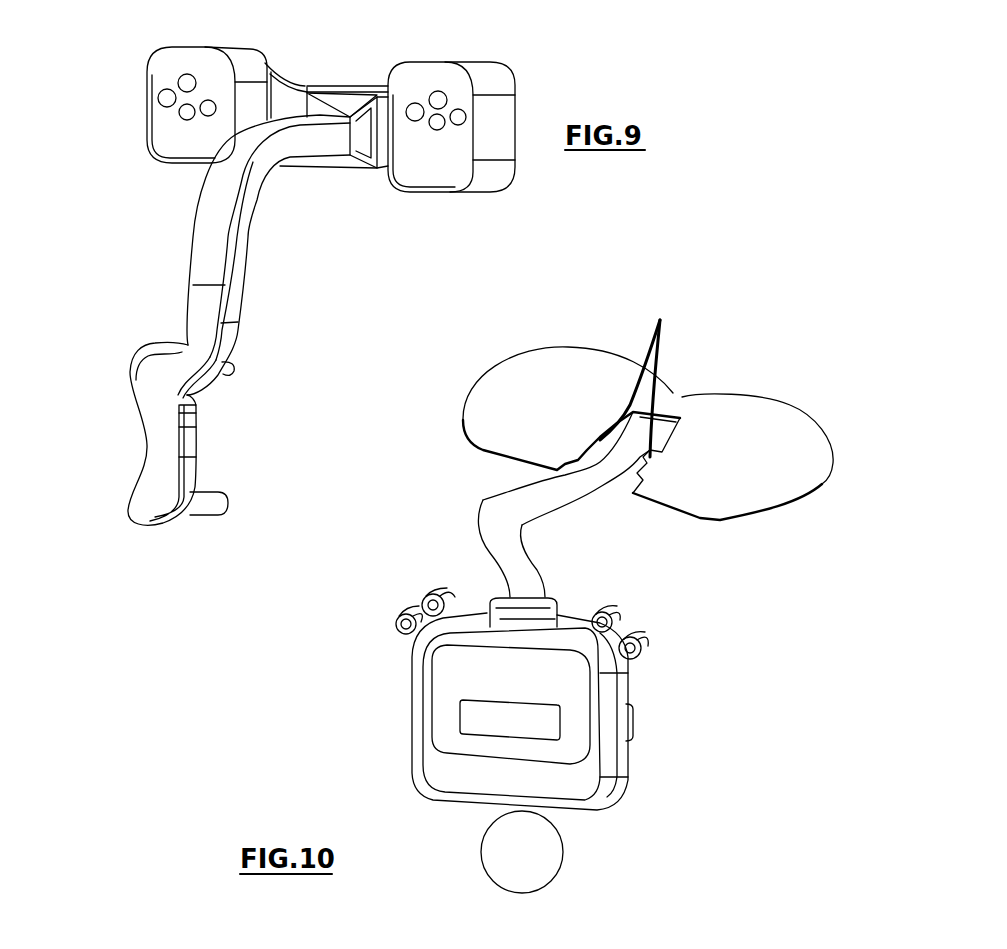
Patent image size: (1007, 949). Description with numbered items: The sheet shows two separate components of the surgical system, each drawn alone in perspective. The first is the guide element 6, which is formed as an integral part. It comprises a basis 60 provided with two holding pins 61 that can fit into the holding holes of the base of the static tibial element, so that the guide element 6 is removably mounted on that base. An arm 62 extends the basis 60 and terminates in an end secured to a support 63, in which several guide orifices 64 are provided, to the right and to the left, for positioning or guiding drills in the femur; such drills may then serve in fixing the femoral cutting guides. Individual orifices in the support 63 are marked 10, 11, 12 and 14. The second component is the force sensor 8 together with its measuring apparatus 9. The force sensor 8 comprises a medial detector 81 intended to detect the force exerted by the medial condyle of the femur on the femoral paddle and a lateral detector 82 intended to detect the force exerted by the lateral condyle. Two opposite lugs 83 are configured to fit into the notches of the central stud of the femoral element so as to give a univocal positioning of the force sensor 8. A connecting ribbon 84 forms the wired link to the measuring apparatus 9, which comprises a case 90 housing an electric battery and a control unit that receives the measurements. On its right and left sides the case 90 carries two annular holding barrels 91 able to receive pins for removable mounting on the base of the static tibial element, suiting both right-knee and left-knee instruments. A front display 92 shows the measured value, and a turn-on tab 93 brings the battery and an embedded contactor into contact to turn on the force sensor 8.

In FIG. 9, the guide element 6 is at (93, 115).
In FIG. 9, the contact 10 is at (186, 125).
In FIG. 9, the contact 11 is at (210, 120).
In FIG. 9, the contact 12 is at (163, 110).
In FIG. 9, the contact 14 is at (188, 76).
In FIG. 9, the basis 60 is at (158, 432).
In FIG. 9, the holding pins 61 is at (230, 370).
In FIG. 9, the arm 62 is at (205, 247).
In FIG. 9, the support 63 is at (291, 97).
In FIG. 9, the guide orifices 64 is at (182, 83).
In FIG. 10, the force sensor 8 is at (593, 342).
In FIG. 10, the medial detector 81 is at (518, 380).
In FIG. 10, the lateral detector 82 is at (777, 425).
In FIG. 10, the lugs 83 is at (649, 367).
In FIG. 10, the connecting ribbon 84 is at (498, 505).
In FIG. 10, the measuring apparatus 9 is at (392, 699).
In FIG. 10, the case 90 is at (606, 792).
In FIG. 10, the annular holding barrels 91 is at (432, 596).
In FIG. 10, the front display 92 is at (468, 716).
In FIG. 10, the turn-on tab 93 is at (550, 870).